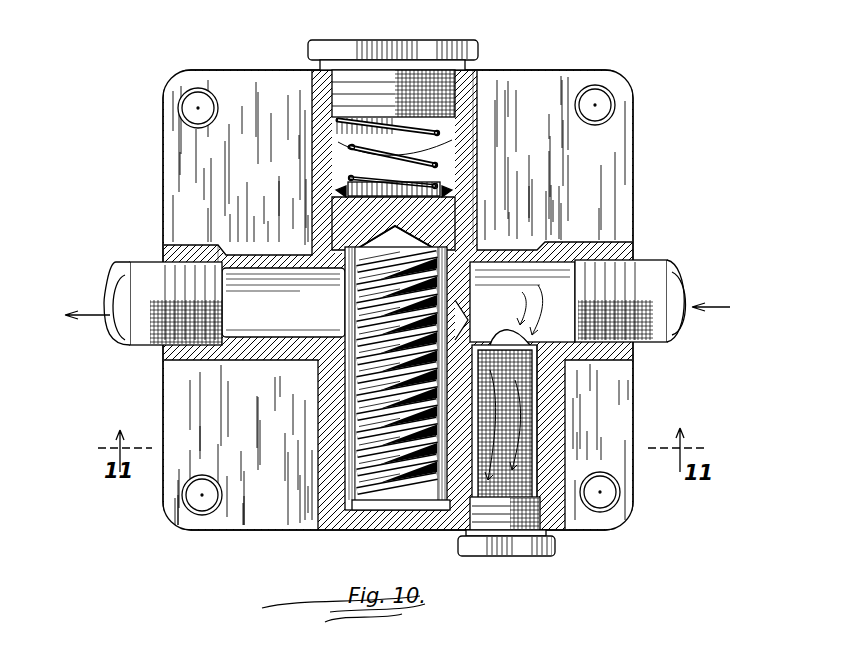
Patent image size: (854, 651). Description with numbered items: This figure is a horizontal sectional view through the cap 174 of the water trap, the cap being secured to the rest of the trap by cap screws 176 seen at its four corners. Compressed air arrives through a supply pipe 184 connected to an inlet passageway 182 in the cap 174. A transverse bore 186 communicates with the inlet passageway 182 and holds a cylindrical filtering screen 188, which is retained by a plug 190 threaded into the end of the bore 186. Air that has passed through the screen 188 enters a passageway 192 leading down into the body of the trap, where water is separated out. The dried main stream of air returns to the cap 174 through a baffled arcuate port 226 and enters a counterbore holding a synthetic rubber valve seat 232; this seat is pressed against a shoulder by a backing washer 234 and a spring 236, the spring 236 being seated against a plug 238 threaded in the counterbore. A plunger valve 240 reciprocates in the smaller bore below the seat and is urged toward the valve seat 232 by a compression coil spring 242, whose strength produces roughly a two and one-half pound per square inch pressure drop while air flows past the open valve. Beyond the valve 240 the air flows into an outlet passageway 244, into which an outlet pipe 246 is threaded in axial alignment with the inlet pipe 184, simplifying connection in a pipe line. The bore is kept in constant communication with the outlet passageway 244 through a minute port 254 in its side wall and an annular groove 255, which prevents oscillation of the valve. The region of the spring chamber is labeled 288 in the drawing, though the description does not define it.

The cap 174 is at (634, 176).
The cap screws 176 is at (198, 108).
The inlet passageway 182 is at (550, 283).
The compressed air supply pipe 184 is at (660, 276).
The transverse bore 186 is at (565, 466).
The cylindrical filtering screen 188 is at (545, 433).
The plug 190 is at (496, 512).
The passageway 192 is at (548, 396).
The port 226 is at (478, 140).
The synthetic rubber valve seat 232 is at (455, 196).
The backing washer 234 is at (340, 197).
The spring 236 is at (355, 157).
The plug 238 is at (385, 80).
The plunger valve 240 is at (445, 230).
The compression coil spring 242 is at (405, 470).
The outlet passageway 244 is at (270, 284).
The outlet pipe 246 is at (130, 278).
The minute port 254 is at (333, 305).
The annular groove 255 is at (452, 302).
The spring chamber 288 is at (352, 440).